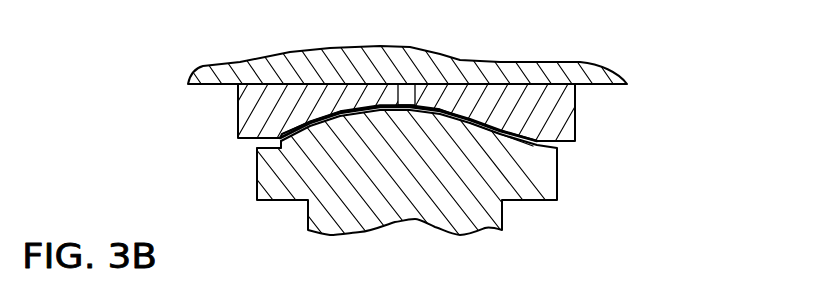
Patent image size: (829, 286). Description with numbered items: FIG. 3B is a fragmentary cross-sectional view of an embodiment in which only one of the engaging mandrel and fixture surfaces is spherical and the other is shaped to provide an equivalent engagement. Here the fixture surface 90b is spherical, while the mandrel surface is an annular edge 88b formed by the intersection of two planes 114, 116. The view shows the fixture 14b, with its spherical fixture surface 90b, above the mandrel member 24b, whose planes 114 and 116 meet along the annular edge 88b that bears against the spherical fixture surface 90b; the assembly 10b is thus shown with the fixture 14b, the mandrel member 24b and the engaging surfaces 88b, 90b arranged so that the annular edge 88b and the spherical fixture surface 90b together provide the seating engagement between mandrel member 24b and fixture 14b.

The flange / upper member 10b is at (203, 85).
The seat block 14b is at (568, 114).
The plane 116 is at (404, 83).
The plane 114 is at (295, 113).
The annular edge 88b is at (341, 110).
The lower member 24b is at (521, 208).
The fixture surface 90b is at (282, 145).